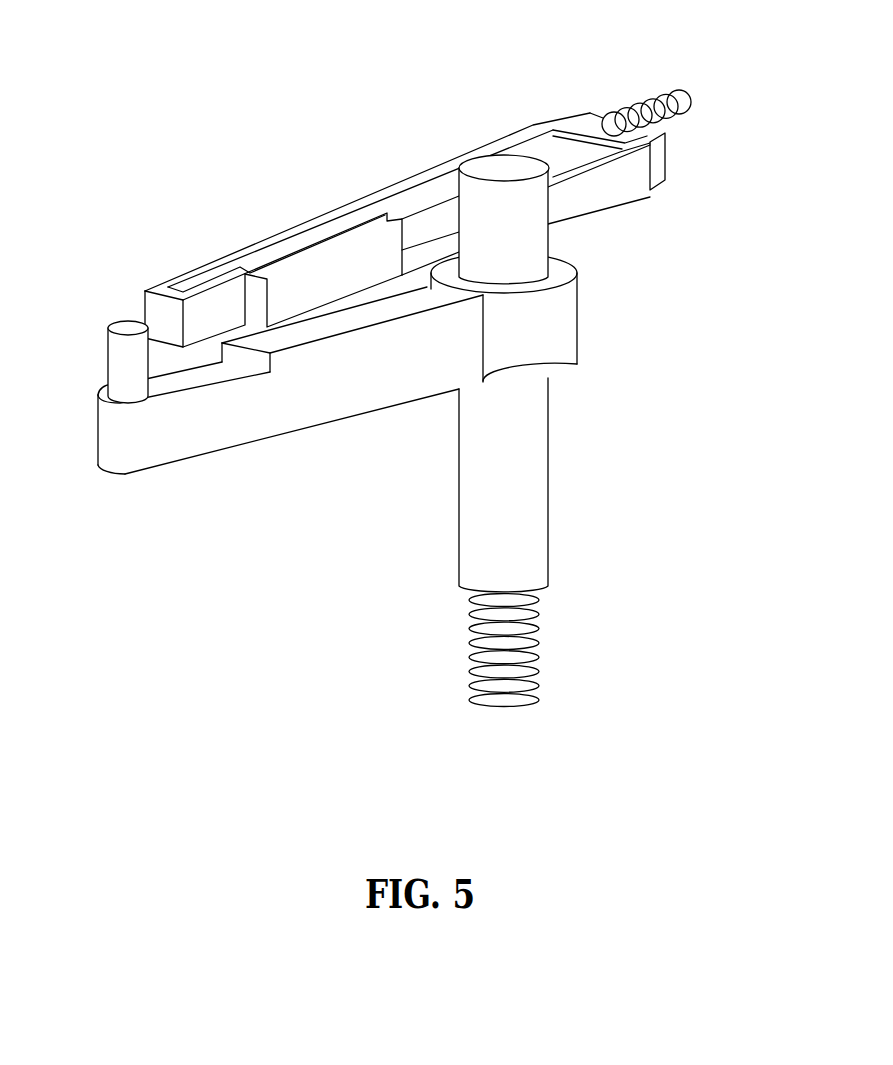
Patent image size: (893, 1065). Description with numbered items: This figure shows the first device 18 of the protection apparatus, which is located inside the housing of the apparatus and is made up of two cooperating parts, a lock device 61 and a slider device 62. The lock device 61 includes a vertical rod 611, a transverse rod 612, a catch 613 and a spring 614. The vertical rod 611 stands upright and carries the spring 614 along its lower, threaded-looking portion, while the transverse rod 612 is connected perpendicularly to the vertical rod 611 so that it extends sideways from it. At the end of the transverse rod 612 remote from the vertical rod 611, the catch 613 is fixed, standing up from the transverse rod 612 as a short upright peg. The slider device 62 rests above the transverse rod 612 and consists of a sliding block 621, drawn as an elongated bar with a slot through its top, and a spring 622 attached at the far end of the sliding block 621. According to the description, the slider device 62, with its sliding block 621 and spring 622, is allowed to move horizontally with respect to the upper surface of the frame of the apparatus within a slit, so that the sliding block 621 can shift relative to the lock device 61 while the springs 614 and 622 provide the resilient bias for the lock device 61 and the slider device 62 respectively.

The first device 18 is at (710, 488).
The lock device 61 is at (337, 420).
The vertical rod 611 is at (470, 210).
The transverse rod 612 is at (263, 418).
The catch 613 is at (118, 370).
The spring 614 is at (540, 646).
The slider device 62 is at (454, 177).
The sliding block 621 is at (533, 128).
The spring 622 is at (679, 119).